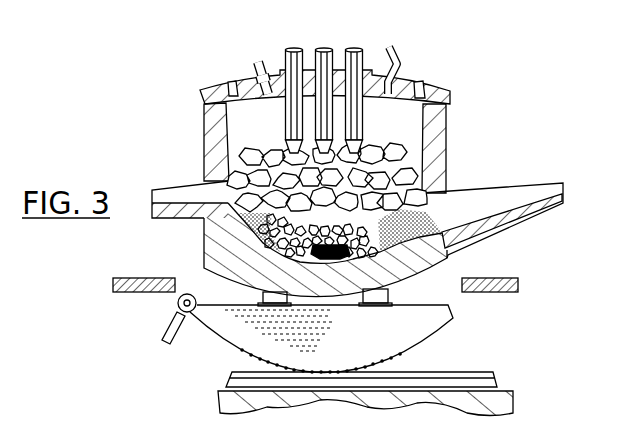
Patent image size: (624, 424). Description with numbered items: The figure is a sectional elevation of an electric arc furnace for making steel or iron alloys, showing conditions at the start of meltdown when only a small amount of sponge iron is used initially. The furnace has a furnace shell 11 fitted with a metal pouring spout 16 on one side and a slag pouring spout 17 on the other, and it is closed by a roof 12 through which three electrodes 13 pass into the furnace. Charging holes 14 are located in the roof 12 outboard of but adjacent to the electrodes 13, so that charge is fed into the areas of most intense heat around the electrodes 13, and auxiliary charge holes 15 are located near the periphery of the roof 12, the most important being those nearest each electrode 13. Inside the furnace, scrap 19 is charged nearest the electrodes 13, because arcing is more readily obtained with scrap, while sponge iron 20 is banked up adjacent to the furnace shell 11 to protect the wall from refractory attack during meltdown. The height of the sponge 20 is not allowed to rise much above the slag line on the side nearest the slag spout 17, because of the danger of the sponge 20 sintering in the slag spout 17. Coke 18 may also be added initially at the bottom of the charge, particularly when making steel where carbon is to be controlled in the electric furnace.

The furnace shell 11 is at (448, 139).
The roof 12 is at (216, 88).
The electrodes 13 is at (353, 48).
The charging holes 14 is at (265, 94).
The auxiliary charge holes 15 is at (423, 83).
The metal pouring spout 16 is at (548, 192).
The slag pouring spout 17 is at (163, 200).
The coke 18 is at (333, 260).
The scrap 19 is at (376, 164).
The sponge iron 20 is at (255, 237).